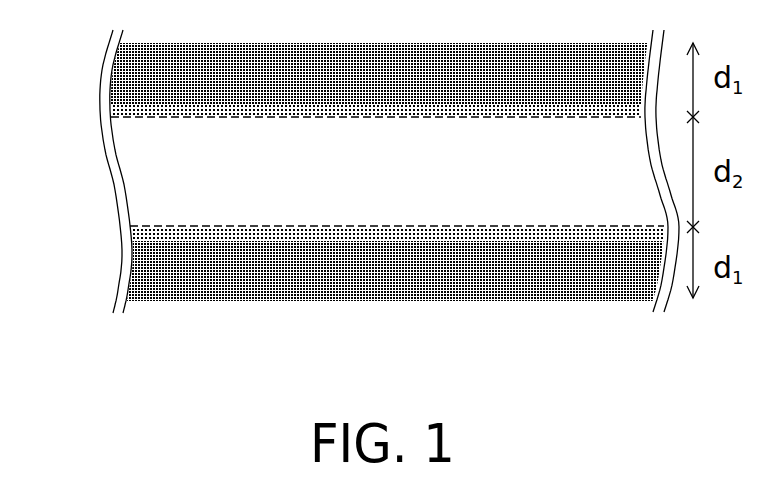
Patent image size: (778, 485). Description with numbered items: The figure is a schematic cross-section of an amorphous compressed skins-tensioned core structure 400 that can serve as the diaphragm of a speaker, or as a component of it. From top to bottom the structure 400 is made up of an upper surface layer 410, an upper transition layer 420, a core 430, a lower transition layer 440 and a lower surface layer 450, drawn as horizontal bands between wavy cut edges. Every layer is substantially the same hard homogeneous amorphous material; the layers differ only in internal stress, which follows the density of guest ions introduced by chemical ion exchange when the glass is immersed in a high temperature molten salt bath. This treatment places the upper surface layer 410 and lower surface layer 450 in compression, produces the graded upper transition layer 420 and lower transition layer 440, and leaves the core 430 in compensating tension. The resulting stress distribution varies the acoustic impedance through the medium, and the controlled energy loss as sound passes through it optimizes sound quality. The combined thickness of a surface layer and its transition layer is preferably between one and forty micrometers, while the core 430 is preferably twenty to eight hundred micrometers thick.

The amorphous compressed skins-tensioned core structure 400 is at (718, 358).
The upper surface layer 410 is at (138, 68).
The upper transition layer 420 is at (134, 109).
The core 430 is at (142, 175).
The lower transition layer 440 is at (137, 233).
The lower surface layer 450 is at (142, 273).